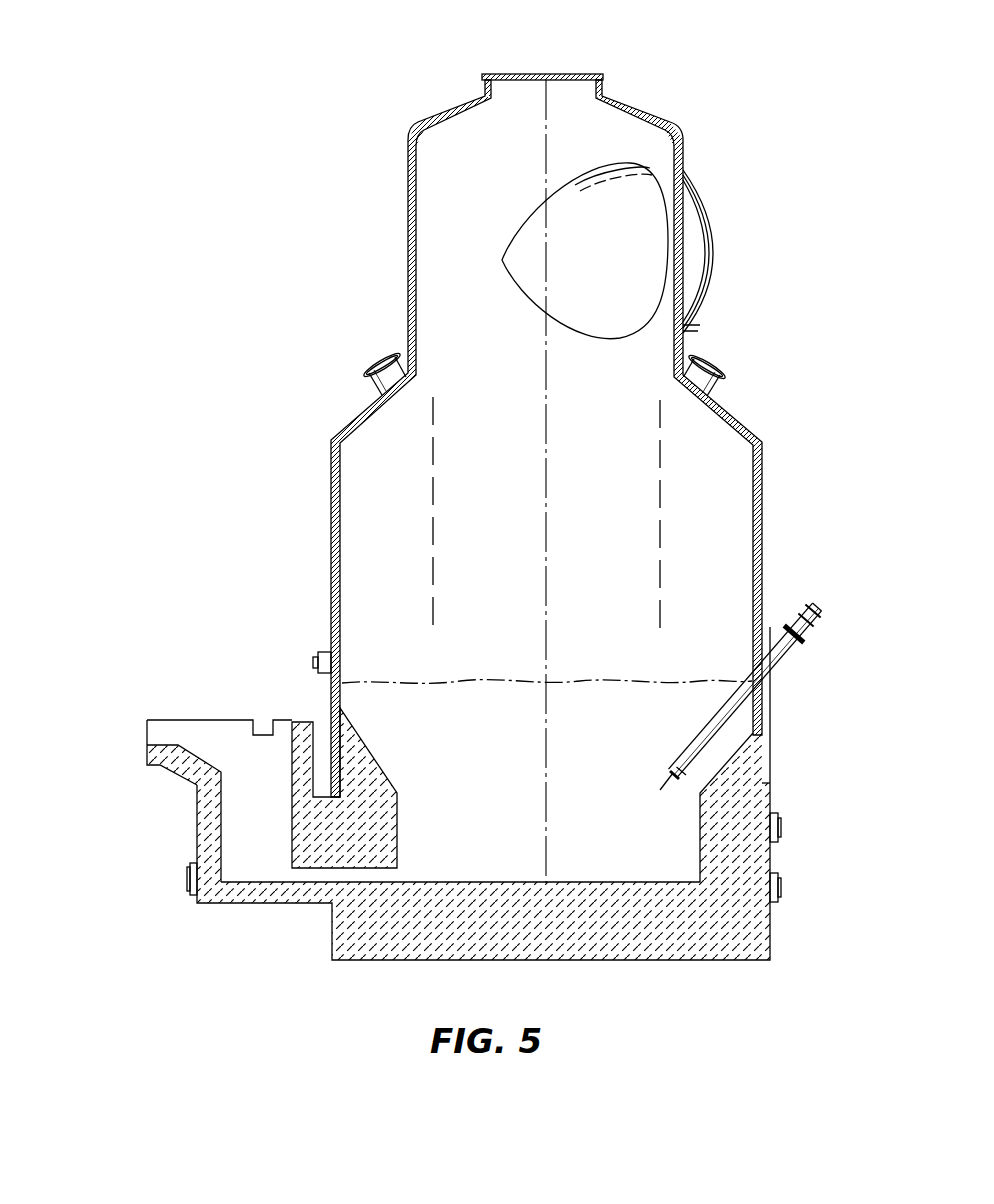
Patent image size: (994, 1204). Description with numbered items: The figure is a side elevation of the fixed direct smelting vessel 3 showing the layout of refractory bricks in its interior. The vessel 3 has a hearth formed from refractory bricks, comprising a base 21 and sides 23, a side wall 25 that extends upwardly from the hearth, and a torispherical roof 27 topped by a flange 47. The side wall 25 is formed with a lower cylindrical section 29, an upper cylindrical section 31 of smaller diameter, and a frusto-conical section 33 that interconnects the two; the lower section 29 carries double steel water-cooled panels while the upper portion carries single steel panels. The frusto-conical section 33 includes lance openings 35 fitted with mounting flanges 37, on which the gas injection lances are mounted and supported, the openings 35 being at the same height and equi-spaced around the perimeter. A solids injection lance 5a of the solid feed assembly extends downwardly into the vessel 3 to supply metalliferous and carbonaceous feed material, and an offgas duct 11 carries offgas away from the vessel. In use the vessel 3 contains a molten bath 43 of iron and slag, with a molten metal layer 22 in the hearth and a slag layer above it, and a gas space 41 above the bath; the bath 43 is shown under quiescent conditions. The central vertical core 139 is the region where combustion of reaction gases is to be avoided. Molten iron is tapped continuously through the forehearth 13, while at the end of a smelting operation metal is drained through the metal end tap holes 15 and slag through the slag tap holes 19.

The direct smelting vessel 3 is at (706, 72).
The top outlet flange 47 is at (565, 75).
The torispherical roof 27 is at (447, 105).
The upper cylindrical section 31 is at (410, 206).
The central vertical core 139 is at (506, 352).
The offgas duct 11 is at (694, 234).
The lance opening 35 is at (372, 340).
The mounting flange 37 is at (370, 360).
The frusto-conical section 33 is at (360, 413).
The metal layer 22 is at (692, 463).
The lower cylindrical section 29 is at (330, 514).
The side wall 25 is at (118, 730).
The forehearth 13 is at (215, 706).
The gas space 41 is at (584, 547).
The molten bath 43 is at (591, 746).
The solids injection lance 5a is at (730, 712).
The hearth sides 23 is at (118, 746).
The slag tap hole 19 is at (782, 826).
The metal end tap hole 15 is at (782, 888).
The hearth base 21 is at (627, 944).